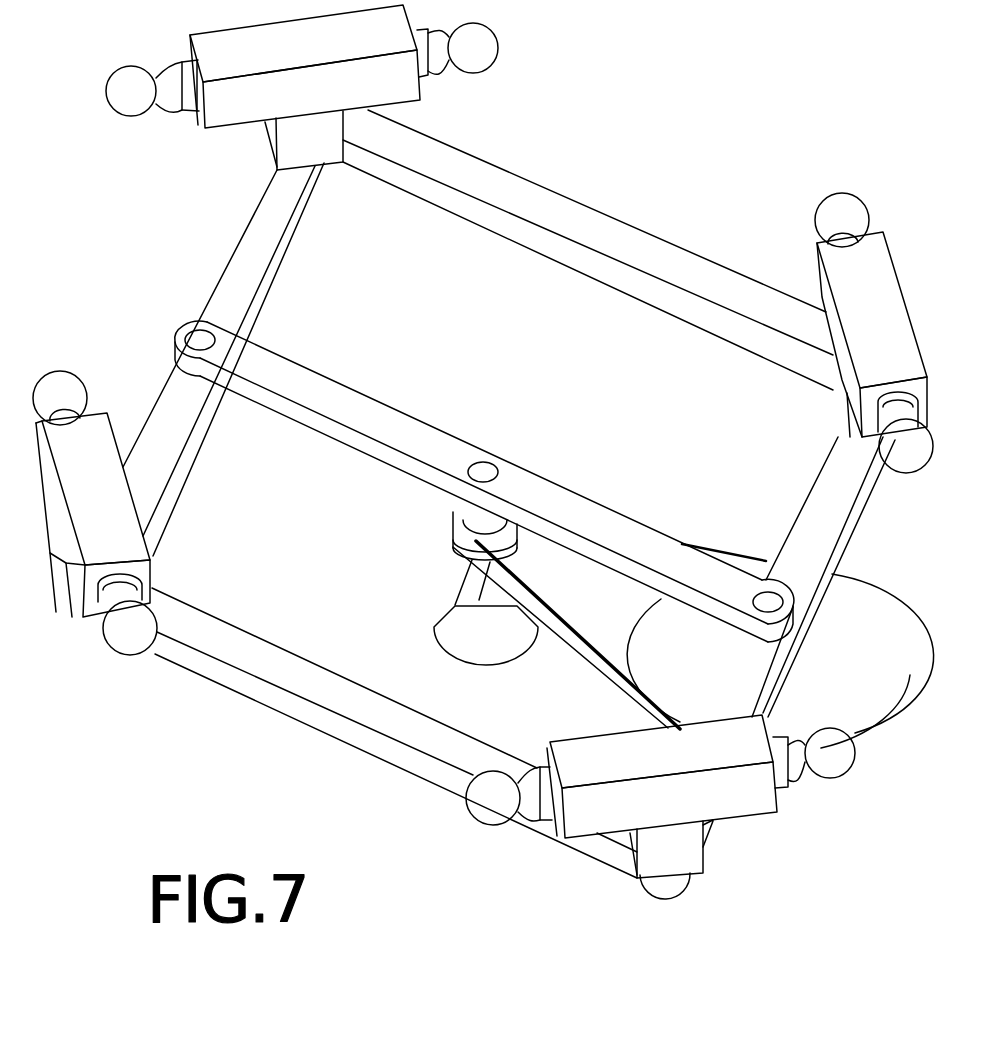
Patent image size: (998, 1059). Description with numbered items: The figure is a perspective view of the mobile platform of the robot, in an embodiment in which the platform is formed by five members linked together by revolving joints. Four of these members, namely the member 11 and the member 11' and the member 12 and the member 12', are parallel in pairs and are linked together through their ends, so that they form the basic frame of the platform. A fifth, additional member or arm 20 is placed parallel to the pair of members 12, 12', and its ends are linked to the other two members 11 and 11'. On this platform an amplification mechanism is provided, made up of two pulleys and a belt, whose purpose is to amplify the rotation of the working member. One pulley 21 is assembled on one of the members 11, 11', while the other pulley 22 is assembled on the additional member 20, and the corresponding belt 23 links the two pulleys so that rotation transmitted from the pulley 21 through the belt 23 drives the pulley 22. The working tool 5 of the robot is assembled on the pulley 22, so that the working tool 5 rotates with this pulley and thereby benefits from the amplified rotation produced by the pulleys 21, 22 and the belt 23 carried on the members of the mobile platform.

The working tool 5 is at (458, 632).
The member 11 is at (189, 359).
The member 11' is at (839, 642).
The member 12 is at (588, 250).
The member 12' is at (394, 733).
The additional member 20 is at (565, 505).
The pulley 21 is at (855, 635).
The pulley 22 is at (453, 517).
The belt 23 is at (560, 640).